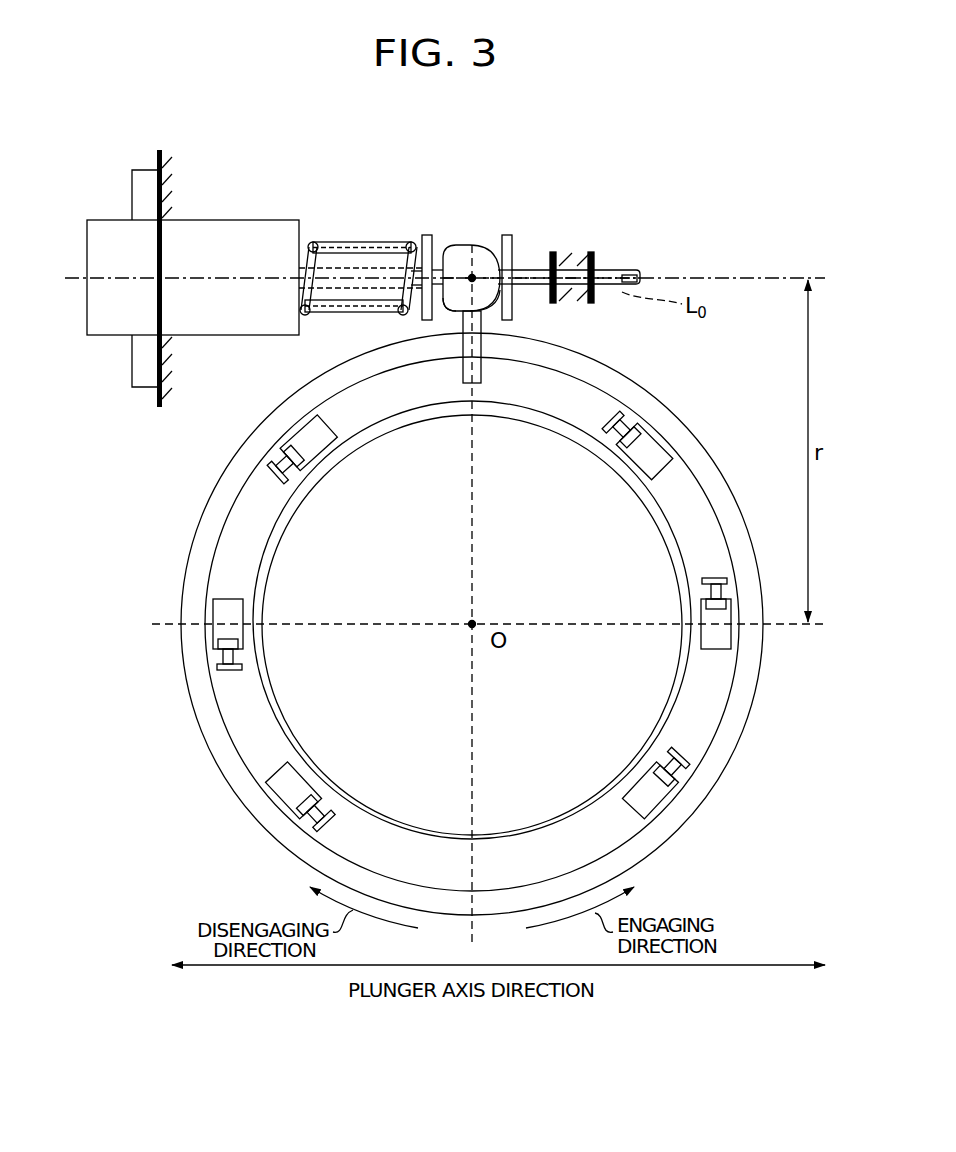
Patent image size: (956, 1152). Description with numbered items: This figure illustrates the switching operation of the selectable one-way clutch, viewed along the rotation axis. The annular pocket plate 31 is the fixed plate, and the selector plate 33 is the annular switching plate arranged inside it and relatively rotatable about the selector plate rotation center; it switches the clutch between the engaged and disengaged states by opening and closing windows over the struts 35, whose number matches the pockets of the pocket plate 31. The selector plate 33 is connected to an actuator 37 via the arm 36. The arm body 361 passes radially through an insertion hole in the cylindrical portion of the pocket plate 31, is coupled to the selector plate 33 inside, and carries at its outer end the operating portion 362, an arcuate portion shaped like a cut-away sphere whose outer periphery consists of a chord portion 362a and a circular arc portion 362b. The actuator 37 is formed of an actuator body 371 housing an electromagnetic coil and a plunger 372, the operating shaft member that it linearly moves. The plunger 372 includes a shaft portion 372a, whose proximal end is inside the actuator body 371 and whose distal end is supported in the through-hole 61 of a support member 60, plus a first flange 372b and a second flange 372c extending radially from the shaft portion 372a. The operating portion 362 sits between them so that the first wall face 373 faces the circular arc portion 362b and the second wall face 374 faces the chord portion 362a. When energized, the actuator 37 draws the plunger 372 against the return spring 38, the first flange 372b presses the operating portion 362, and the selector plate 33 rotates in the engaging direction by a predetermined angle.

The pocket plate 31 is at (185, 594).
The selector plate 33 is at (240, 705).
The struts 35 is at (276, 447).
The arm 36 is at (461, 233).
The actuator 37 is at (85, 195).
The return spring 38 is at (383, 243).
The support member 60 is at (603, 267).
The through-hole 61 is at (598, 298).
The arm body 361 is at (462, 372).
The operating portion 362 is at (477, 268).
The chord portion 362a is at (438, 306).
The circular arc portion 362b is at (493, 311).
The actuator body 371 is at (299, 219).
The plunger 372 is at (341, 244).
The shaft portion 372a is at (633, 268).
The first flange 372b is at (508, 229).
The second flange 372c is at (426, 232).
The first wall face 373 is at (494, 236).
The second wall face 374 is at (438, 237).